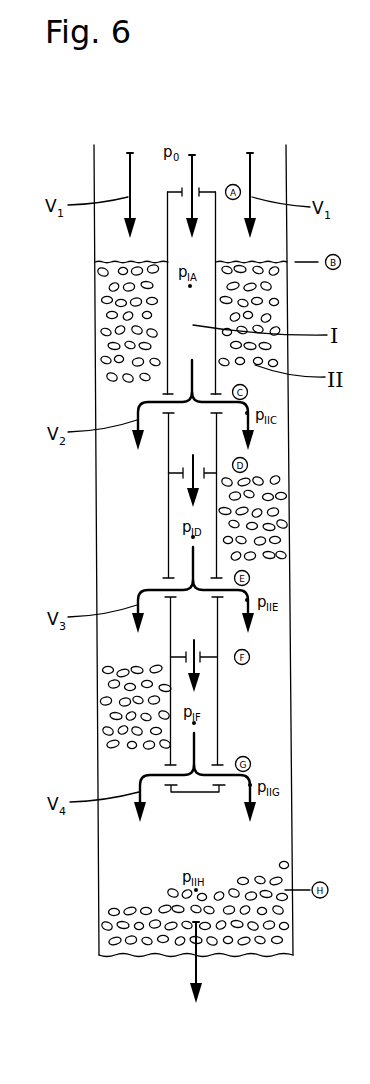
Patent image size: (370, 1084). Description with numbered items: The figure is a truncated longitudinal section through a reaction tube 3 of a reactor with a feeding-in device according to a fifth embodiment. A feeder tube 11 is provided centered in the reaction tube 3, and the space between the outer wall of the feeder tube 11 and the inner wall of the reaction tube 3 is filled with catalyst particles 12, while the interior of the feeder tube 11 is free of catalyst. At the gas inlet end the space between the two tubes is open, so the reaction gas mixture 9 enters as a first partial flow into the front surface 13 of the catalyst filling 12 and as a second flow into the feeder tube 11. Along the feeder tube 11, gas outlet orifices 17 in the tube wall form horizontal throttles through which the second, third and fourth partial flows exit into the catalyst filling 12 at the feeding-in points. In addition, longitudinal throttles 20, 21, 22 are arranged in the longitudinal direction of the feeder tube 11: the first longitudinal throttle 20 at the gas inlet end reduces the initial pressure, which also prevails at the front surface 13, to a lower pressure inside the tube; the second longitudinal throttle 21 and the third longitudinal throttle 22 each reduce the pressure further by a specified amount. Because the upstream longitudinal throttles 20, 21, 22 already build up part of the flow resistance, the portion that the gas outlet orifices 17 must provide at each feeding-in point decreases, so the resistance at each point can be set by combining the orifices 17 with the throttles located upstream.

The reaction tube 3 is at (94, 512).
The reaction gas mixture 9 is at (248, 161).
The feeder tube 11 is at (168, 294).
The catalyst particles 12 is at (107, 333).
The front surface 13 is at (101, 262).
The gas outlet orifices 17 is at (163, 397).
The first longitudinal throttle 20 is at (193, 187).
The second longitudinal throttle 21 is at (172, 474).
The third longitudinal throttle 22 is at (172, 658).